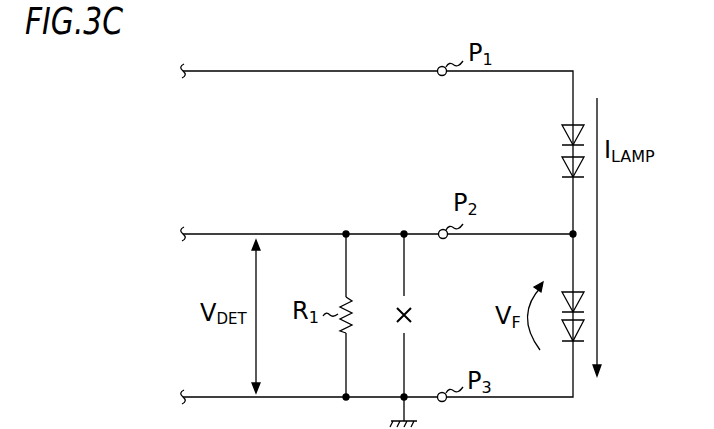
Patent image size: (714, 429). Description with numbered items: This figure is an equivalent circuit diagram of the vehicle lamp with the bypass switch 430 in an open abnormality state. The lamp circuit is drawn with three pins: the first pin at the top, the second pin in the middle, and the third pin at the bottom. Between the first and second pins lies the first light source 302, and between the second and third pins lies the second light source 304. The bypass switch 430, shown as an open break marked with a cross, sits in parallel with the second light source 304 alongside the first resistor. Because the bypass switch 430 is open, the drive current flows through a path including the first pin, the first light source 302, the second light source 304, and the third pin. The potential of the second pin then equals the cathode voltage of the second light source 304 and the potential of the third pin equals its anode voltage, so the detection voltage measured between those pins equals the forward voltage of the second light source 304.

The first light source 302 is at (556, 140).
The second light source 304 is at (555, 296).
The bypass switch 430 is at (423, 310).